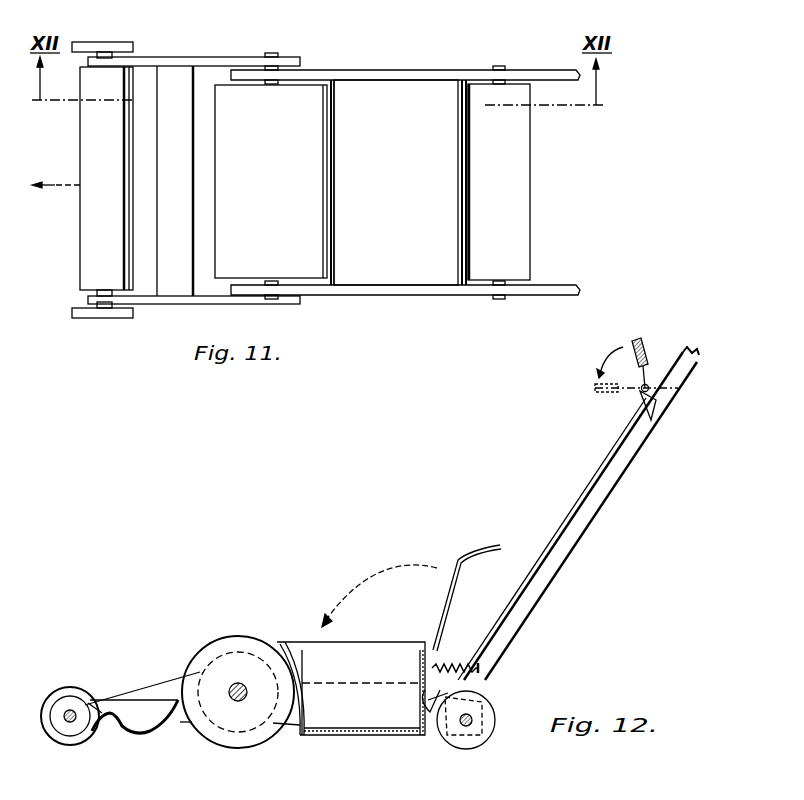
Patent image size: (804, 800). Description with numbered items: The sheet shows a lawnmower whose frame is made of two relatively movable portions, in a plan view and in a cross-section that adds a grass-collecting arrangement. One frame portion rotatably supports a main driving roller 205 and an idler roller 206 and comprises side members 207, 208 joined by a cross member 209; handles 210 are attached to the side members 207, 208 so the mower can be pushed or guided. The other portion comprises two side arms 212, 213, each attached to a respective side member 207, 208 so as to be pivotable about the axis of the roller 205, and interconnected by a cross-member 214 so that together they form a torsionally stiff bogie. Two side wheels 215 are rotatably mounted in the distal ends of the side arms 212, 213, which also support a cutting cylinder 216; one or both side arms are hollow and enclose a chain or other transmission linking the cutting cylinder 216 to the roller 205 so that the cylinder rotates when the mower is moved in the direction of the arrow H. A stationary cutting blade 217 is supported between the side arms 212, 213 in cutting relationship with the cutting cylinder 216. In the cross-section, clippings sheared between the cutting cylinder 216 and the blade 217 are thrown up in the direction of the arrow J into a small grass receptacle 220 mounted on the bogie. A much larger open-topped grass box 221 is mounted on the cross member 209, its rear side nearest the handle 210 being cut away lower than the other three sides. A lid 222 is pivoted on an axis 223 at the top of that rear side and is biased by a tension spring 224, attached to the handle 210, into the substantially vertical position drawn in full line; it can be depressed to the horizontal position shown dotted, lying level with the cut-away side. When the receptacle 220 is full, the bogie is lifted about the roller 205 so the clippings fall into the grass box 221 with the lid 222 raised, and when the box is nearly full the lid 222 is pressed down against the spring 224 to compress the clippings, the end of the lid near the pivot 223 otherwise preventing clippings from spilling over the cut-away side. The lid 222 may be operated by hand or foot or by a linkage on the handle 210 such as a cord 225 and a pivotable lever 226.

In FIG. 11, the main driving roller 205 is at (291, 149).
In FIG. 12, the main driving roller 205 is at (230, 738).
In FIG. 11, the idler roller 206 is at (523, 222).
In FIG. 12, the idler roller 206 is at (475, 741).
In FIG. 11, the side member 207 is at (340, 71).
In FIG. 12, the side member 207 is at (290, 728).
In FIG. 11, the side member 208 is at (340, 296).
In FIG. 11, the cross member 209 is at (409, 149).
In FIG. 11, the handles 210 is at (500, 71).
In FIG. 12, the handles 210 is at (498, 652).
In FIG. 11, the side arm 212 is at (163, 62).
In FIG. 12, the side arm 212 is at (180, 717).
In FIG. 11, the side arm 213 is at (162, 301).
In FIG. 11, the cross-member 214 is at (160, 165).
In FIG. 11, the side wheels 215 is at (103, 44).
In FIG. 12, the side wheels 215 is at (67, 743).
In FIG. 11, the cutting cylinder 216 is at (95, 250).
In FIG. 12, the cutting cylinder 216 is at (68, 700).
In FIG. 11, the stationary cutting blade 217 is at (128, 203).
In FIG. 12, the stationary cutting blade 217 is at (108, 722).
In FIG. 12, the grass receptacle 220 is at (142, 713).
In FIG. 12, the grass box 221 is at (352, 648).
In FIG. 12, the lid 222 is at (440, 628).
In FIG. 12, the axis 223 is at (412, 712).
In FIG. 12, the tension spring 224 is at (448, 668).
In FIG. 12, the cord 225 is at (590, 493).
In FIG. 12, the pivotable lever 226 is at (642, 349).
In FIG. 11, the arrow H is at (56, 174).
In FIG. 12, the arrow J is at (100, 713).